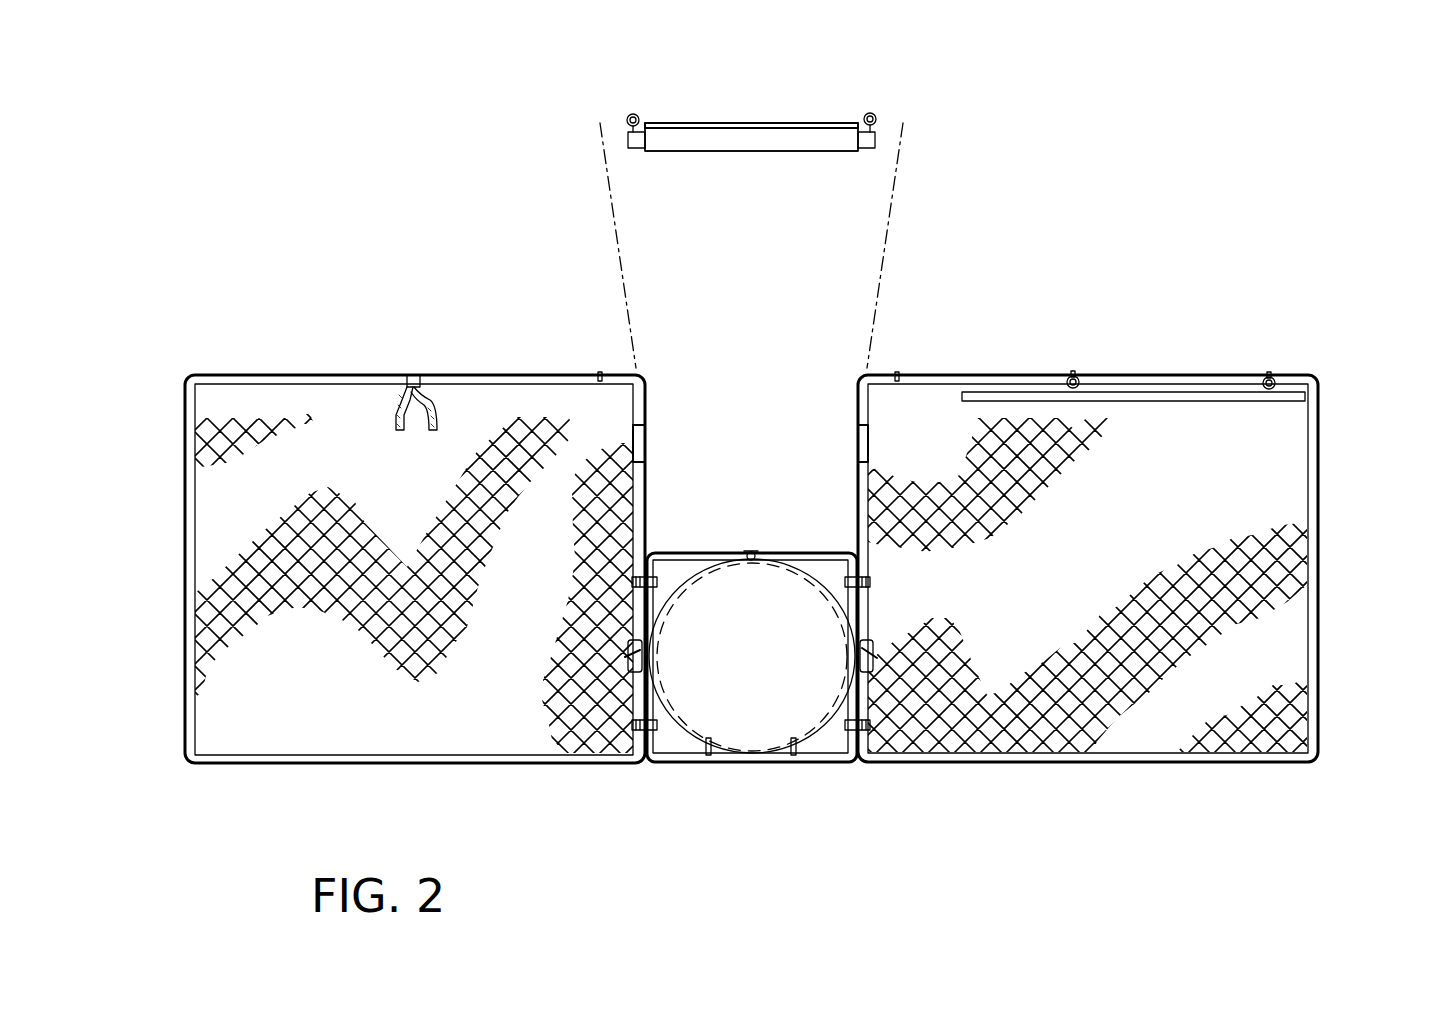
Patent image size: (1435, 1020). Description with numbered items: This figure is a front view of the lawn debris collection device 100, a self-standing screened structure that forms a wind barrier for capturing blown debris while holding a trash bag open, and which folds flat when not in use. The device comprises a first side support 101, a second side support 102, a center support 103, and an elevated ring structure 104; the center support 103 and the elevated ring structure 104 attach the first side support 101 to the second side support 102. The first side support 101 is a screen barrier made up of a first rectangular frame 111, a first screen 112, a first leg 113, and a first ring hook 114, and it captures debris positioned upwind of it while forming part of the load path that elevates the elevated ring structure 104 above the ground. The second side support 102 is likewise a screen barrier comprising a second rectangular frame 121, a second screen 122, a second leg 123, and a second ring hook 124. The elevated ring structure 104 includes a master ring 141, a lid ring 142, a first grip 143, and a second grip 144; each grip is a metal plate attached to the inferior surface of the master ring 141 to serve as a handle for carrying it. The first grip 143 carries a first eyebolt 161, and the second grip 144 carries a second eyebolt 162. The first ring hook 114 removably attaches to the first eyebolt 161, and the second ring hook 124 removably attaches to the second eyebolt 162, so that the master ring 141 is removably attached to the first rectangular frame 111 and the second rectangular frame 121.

The lawn debris collection device 100 is at (192, 150).
The first side support 101 is at (182, 368).
The second side support 102 is at (1307, 372).
The center support 103 is at (792, 550).
The elevated ring structure 104 is at (748, 118).
The first rectangular frame 111 is at (312, 383).
The first screen 112 is at (226, 435).
The first leg 113 is at (645, 443).
The first ring hook 114 is at (601, 372).
The second rectangular frame 121 is at (1313, 645).
The second screen 122 is at (1255, 565).
The second leg 123 is at (858, 442).
The second ring hook 124 is at (897, 378).
The master ring 141 is at (743, 151).
The lid ring 142 is at (697, 123).
The first grip 143 is at (633, 148).
The second grip 144 is at (862, 148).
The first eyebolt 161 is at (633, 114).
The second eyebolt 162 is at (870, 113).